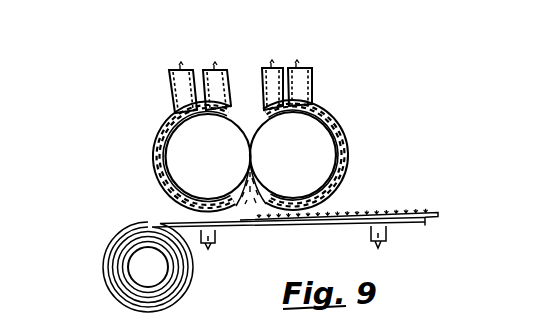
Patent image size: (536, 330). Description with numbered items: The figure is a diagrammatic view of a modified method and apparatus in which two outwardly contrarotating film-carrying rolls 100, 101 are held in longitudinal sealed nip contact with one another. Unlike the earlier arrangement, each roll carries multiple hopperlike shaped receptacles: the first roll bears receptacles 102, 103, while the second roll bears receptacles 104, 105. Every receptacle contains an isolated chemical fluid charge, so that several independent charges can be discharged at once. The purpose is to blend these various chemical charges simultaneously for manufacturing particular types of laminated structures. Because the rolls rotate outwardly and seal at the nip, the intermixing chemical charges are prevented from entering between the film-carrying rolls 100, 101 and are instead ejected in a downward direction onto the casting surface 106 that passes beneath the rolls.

The film-carrying roll 100 is at (184, 162).
The film-carrying roll 101 is at (315, 148).
The hopperlike shaped receptacle 102 is at (169, 92).
The hopperlike shaped receptacle 103 is at (226, 72).
The hopperlike shaped receptacle 104 is at (278, 69).
The hopperlike shaped receptacle 105 is at (312, 83).
The casting surface 106 is at (247, 219).